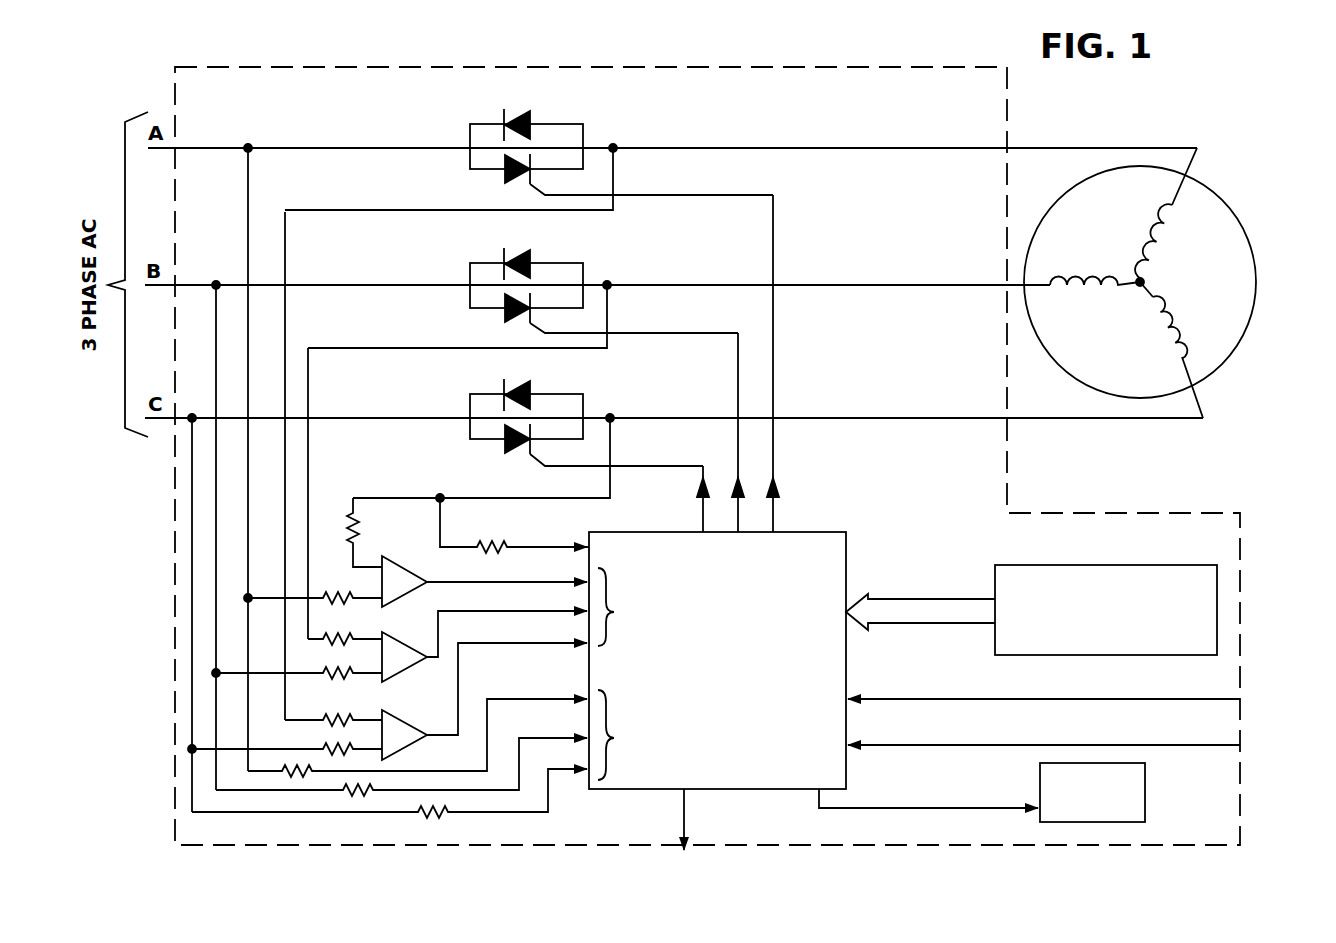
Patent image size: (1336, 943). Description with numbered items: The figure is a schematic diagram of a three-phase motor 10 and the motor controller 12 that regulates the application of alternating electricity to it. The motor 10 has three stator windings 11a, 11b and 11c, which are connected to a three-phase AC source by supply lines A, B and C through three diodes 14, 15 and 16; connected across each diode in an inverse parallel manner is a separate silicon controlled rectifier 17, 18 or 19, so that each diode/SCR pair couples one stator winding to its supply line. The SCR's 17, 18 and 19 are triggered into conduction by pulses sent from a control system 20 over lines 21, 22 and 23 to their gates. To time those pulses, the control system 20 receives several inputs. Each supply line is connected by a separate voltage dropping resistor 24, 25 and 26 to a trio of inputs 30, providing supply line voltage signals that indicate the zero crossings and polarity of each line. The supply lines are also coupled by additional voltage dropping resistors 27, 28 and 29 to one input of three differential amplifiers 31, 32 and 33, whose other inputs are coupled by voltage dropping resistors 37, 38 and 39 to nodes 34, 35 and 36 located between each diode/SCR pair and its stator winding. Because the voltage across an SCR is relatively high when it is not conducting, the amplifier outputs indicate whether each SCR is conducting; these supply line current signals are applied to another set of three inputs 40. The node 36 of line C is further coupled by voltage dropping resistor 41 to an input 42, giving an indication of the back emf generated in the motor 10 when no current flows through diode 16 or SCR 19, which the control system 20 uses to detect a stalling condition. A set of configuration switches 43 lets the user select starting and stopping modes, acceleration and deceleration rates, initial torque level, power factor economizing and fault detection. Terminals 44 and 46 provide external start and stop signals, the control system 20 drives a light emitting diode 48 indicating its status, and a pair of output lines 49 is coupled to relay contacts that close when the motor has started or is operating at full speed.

The three-phase motor 10 is at (1078, 368).
The stator winding 11a is at (1166, 215).
The stator winding 11b is at (1062, 280).
The stator winding 11c is at (1170, 328).
The motor controller 12 is at (172, 640).
The diode 14 is at (500, 128).
The diode 15 is at (500, 268).
The diode 16 is at (500, 400).
The silicon controlled rectifier 17 is at (506, 170).
The silicon controlled rectifier 18 is at (506, 309).
The silicon controlled rectifier 19 is at (506, 440).
The control system 20 is at (717, 660).
The line 21 is at (774, 460).
The line 22 is at (737, 437).
The line 23 is at (702, 482).
The voltage dropping resistor 24 is at (305, 776).
The voltage dropping resistor 25 is at (365, 795).
The voltage dropping resistor 26 is at (445, 816).
The voltage dropping resistor 27 is at (340, 595).
The voltage dropping resistor 28 is at (332, 670).
The voltage dropping resistor 29 is at (338, 746).
The inputs 30 is at (623, 735).
The differential amplifier 31 is at (415, 578).
The differential amplifier 32 is at (418, 648).
The differential amplifier 33 is at (412, 735).
The node 34 is at (613, 146).
The node 35 is at (607, 283).
The node 36 is at (610, 416).
The voltage dropping resistor 37 is at (355, 533).
The voltage dropping resistor 38 is at (343, 618).
The voltage dropping resistor 39 is at (338, 716).
The inputs 40 is at (624, 607).
The voltage dropping resistor 41 is at (500, 522).
The input 42 is at (585, 543).
The configuration switches 43 is at (1088, 564).
The terminal 44 is at (1240, 715).
The terminal 46 is at (1240, 760).
The light emitting diode 48 is at (1040, 777).
The output lines 49 is at (688, 825).